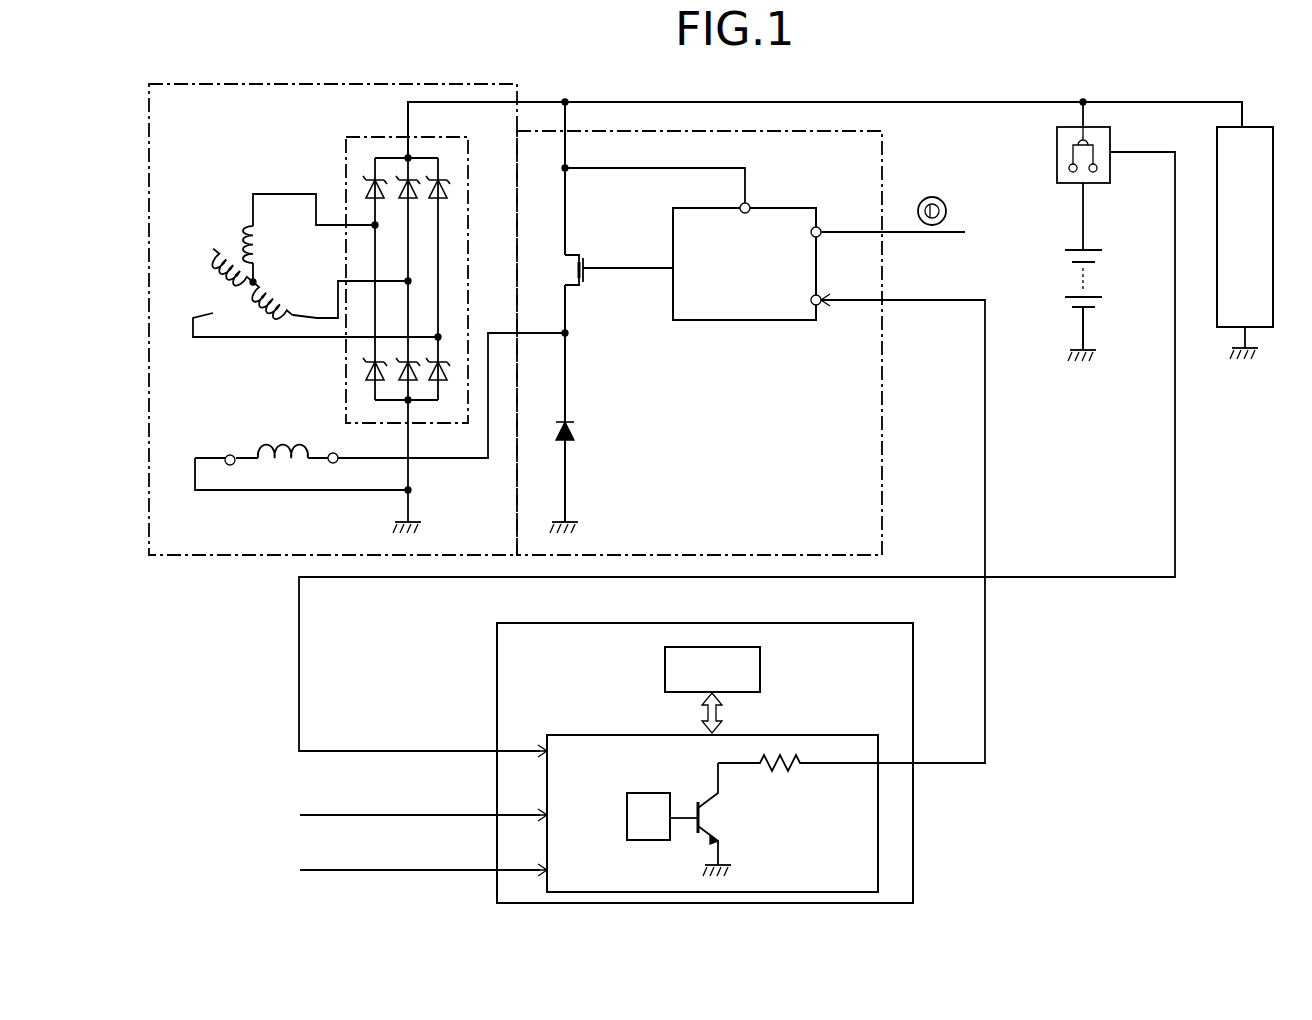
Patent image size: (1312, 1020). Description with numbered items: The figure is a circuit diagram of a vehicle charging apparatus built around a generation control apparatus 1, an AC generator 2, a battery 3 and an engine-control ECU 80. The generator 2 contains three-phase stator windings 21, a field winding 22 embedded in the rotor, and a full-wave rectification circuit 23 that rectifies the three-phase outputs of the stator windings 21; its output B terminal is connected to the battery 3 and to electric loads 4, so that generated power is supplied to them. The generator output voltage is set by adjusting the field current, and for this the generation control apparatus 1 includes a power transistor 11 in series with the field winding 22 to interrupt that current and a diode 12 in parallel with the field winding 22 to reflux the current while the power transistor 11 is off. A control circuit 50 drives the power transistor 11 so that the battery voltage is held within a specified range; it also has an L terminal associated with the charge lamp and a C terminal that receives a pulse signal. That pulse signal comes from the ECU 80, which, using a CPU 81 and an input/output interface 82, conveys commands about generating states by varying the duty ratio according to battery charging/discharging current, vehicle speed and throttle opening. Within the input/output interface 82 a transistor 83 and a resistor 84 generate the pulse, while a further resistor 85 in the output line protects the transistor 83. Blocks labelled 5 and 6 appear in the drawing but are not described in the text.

The generation control apparatus 1 is at (882, 138).
The AC generator 2 is at (439, 84).
The battery 3 is at (1094, 250).
The electric loads 4 is at (1262, 127).
The current sensor 5 is at (1110, 136).
The charge lamp 6 is at (945, 196).
The power transistor 11 is at (583, 243).
The diode 12 is at (570, 422).
The three-phase stator windings 21 is at (248, 281).
The field winding 22 is at (274, 457).
The full-wave rectification circuit 23 is at (356, 137).
The control circuit 50 is at (745, 320).
The ECU 80 is at (494, 659).
The CPU 81 is at (760, 668).
The input/output interface 82 is at (848, 735).
The transistor 83 is at (692, 832).
The resistor 84 is at (648, 793).
The resistor 85 is at (783, 770).